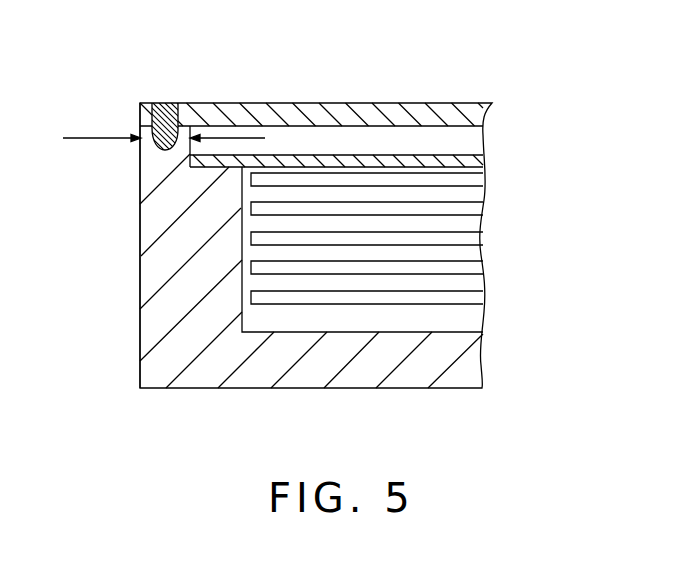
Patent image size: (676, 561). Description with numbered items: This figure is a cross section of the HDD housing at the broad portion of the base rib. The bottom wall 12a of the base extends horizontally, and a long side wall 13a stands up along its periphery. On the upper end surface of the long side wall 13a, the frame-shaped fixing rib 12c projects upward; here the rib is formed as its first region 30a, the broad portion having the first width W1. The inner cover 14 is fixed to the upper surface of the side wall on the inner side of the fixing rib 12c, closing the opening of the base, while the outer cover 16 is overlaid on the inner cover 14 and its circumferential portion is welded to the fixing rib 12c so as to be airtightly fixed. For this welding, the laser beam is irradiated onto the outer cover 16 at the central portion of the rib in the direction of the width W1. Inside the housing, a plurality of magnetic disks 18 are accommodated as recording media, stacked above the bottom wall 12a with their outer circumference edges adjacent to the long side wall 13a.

The bottom wall 12a is at (315, 377).
The fixing rib 12c is at (136, 153).
The long side wall 13a is at (148, 239).
The inner cover 14 is at (417, 155).
The outer cover 16 is at (335, 103).
The magnetic disk 18 is at (476, 300).
The first region 30a is at (189, 118).
The first width W1 is at (163, 128).